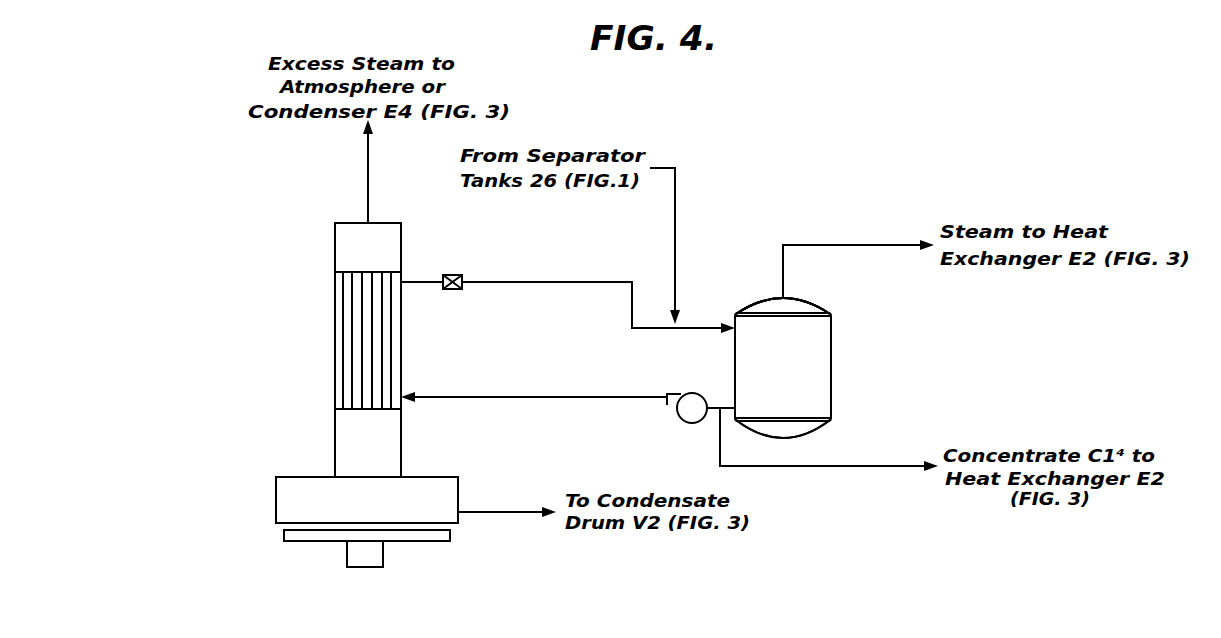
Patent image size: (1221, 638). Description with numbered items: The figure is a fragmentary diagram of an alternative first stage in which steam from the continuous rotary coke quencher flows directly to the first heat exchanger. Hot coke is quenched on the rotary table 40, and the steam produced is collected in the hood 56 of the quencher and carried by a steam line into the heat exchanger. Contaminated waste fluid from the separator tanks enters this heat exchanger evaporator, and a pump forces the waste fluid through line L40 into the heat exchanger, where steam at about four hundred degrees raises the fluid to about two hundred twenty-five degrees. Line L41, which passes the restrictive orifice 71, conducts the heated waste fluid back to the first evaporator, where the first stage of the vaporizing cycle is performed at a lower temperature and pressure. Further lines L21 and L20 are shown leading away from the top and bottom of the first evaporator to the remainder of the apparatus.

The restrictive orifice 71 is at (452, 275).
The line L41 is at (527, 281).
The steam line to heat exchanger E2 L21 is at (886, 245).
The line L40 is at (546, 396).
The concentrate line L20 is at (897, 465).
The hood 56 is at (276, 498).
The rotary table 40 is at (440, 542).